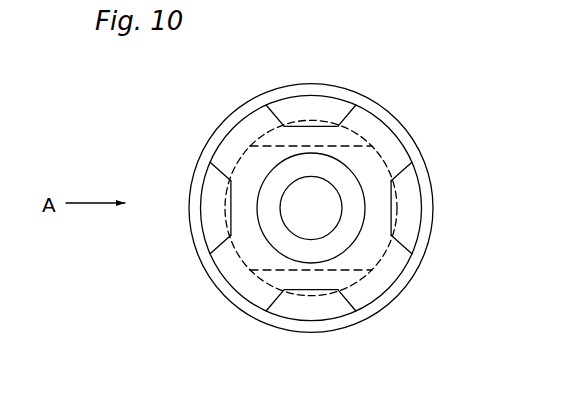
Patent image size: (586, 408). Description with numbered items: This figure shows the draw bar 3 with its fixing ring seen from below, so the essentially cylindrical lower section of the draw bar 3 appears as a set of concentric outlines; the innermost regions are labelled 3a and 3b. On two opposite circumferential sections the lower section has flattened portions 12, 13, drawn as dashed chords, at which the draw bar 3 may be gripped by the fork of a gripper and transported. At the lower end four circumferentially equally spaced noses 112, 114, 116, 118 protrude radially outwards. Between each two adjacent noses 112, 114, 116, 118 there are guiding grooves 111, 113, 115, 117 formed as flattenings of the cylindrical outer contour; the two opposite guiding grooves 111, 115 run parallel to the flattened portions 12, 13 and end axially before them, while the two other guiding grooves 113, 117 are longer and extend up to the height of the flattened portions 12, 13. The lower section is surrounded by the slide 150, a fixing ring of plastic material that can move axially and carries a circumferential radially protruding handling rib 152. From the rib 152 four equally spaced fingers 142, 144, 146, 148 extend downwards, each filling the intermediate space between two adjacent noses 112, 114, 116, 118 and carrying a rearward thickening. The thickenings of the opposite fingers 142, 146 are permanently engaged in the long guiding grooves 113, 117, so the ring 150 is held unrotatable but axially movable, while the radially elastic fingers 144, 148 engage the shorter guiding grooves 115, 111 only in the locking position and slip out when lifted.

The draw bar 3 is at (376, 112).
The central bore 3a is at (337, 184).
The inner hub 3b is at (374, 189).
The flattened portion 12 is at (285, 147).
The flattened portion 13 is at (337, 271).
The guiding groove 111 is at (283, 125).
The nose 112 is at (383, 138).
The guiding groove 113 is at (405, 226).
The nose 114 is at (380, 285).
The guiding groove 115 is at (283, 297).
The nose 116 is at (238, 282).
The guiding groove 117 is at (228, 200).
The nose 118 is at (242, 140).
The finger 142 is at (408, 216).
The finger 144 is at (326, 308).
The finger 146 is at (210, 217).
The finger 148 is at (322, 108).
The slide 150 is at (409, 286).
The handling rib 152 is at (410, 164).